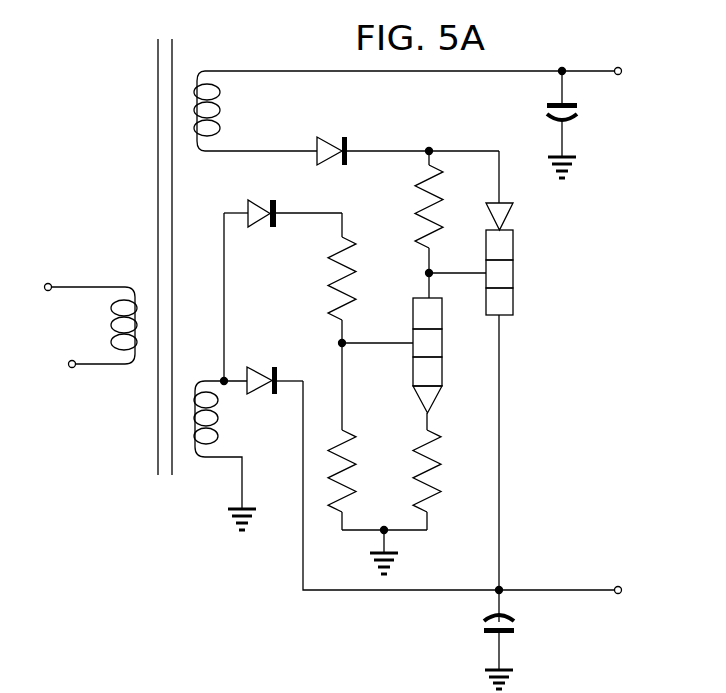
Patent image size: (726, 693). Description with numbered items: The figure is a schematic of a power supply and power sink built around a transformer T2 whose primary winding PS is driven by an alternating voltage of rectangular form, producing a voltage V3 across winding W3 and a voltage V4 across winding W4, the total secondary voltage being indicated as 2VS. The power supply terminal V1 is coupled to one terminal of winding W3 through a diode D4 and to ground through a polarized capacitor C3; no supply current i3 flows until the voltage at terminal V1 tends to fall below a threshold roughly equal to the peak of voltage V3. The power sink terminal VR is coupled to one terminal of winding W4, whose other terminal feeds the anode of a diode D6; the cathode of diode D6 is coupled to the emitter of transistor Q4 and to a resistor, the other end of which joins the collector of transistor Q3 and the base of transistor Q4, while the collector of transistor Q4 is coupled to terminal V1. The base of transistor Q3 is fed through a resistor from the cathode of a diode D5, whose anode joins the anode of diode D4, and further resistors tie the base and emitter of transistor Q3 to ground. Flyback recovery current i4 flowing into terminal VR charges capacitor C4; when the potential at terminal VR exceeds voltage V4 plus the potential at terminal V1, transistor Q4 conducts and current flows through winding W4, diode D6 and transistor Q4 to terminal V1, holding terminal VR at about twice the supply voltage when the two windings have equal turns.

The transformer T2 is at (163, 38).
The primary winding PS is at (156, 502).
The winding W4 is at (197, 76).
The winding W3 is at (193, 458).
The diode D6 is at (323, 136).
The diode D5 is at (263, 199).
The diode D4 is at (258, 366).
The transistor Q4 is at (513, 275).
The transistor Q3 is at (442, 352).
The capacitor C4 is at (577, 113).
The polarized capacitor C3 is at (514, 619).
The voltage across winding W4 V4 is at (243, 112).
The voltage across winding W3 V3 is at (247, 418).
The secondary voltage 2VS is at (410, 55).
The power sink terminal VR is at (628, 59).
The power supply terminal V1 is at (630, 601).
The sink current i4 is at (562, 56).
The power supply current i3 is at (323, 611).